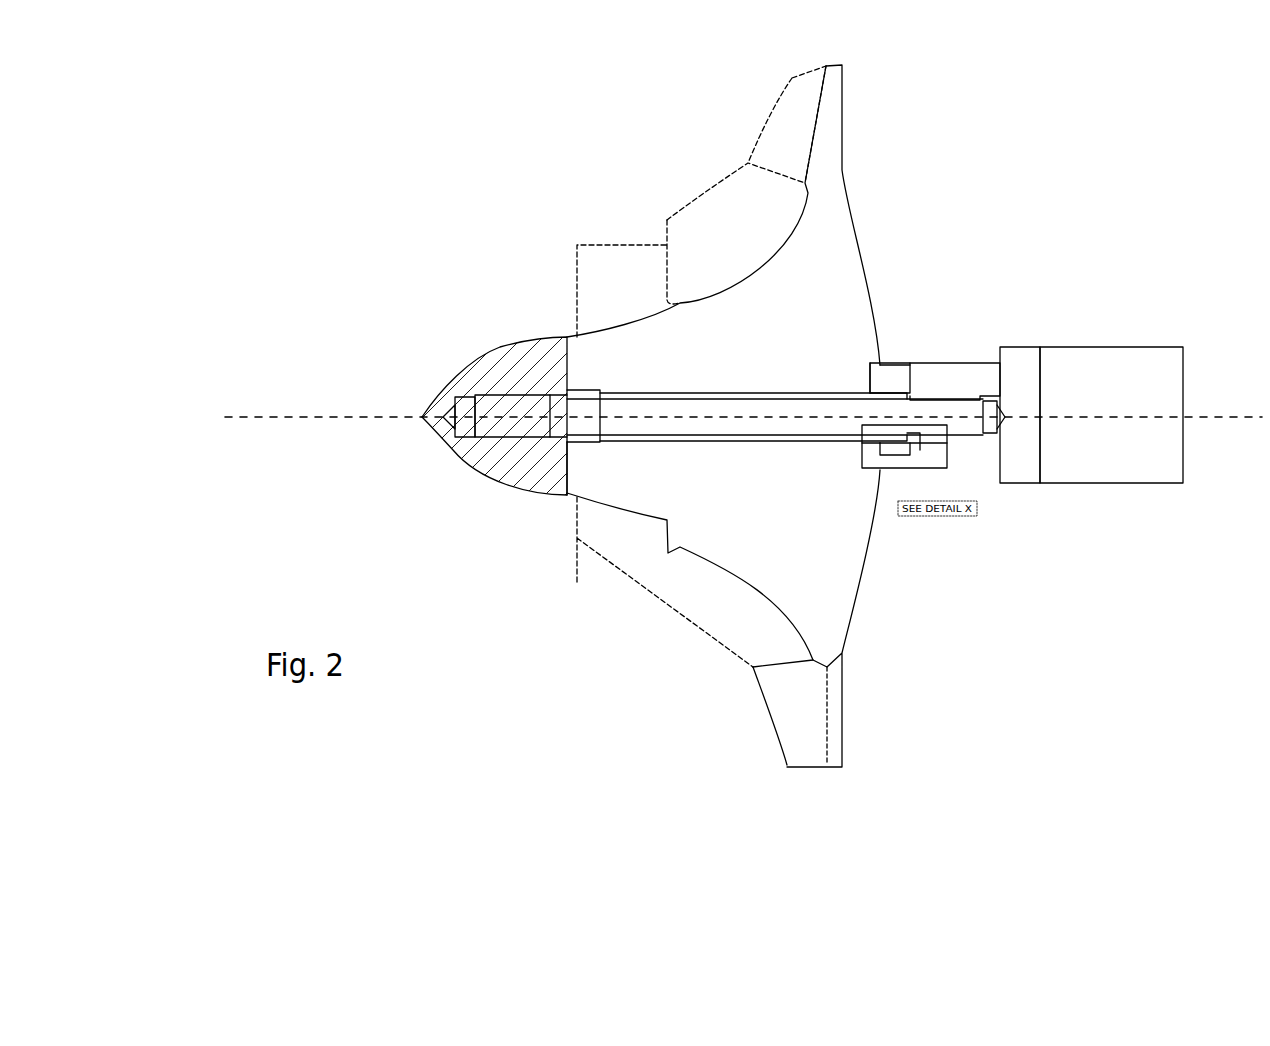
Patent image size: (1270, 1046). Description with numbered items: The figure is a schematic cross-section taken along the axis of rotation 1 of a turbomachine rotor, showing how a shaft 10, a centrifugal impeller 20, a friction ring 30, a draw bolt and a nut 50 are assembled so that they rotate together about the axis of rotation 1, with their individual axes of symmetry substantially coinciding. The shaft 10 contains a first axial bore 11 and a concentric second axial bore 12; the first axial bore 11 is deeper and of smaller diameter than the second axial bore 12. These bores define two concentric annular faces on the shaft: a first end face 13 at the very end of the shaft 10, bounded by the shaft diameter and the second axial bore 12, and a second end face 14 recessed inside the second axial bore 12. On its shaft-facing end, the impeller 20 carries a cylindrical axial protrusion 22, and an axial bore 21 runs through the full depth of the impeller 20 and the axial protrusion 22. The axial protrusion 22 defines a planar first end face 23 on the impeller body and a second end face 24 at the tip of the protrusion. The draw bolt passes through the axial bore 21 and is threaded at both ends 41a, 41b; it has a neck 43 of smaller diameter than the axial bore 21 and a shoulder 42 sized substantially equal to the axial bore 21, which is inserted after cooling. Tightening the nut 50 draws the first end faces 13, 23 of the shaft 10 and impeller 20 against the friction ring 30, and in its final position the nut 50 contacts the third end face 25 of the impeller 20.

The axis of rotation 1 is at (300, 417).
The shaft 10 is at (1135, 377).
The first axial bore 11 is at (977, 395).
The second axial bore 12 is at (893, 378).
The first end face 13 is at (878, 378).
The second end face 14 is at (913, 395).
The impeller 20 is at (830, 633).
The axial bore 21 is at (723, 438).
The axial protrusion 22 is at (895, 450).
The first end face 23 is at (808, 350).
The second end face 24 is at (910, 450).
The third end face 25 is at (566, 462).
The friction ring 30 is at (878, 375).
The threaded end 41a is at (497, 430).
The threaded end 41b is at (967, 424).
The shoulder 42 is at (597, 395).
The neck 43 is at (707, 400).
The nut 50 is at (500, 367).